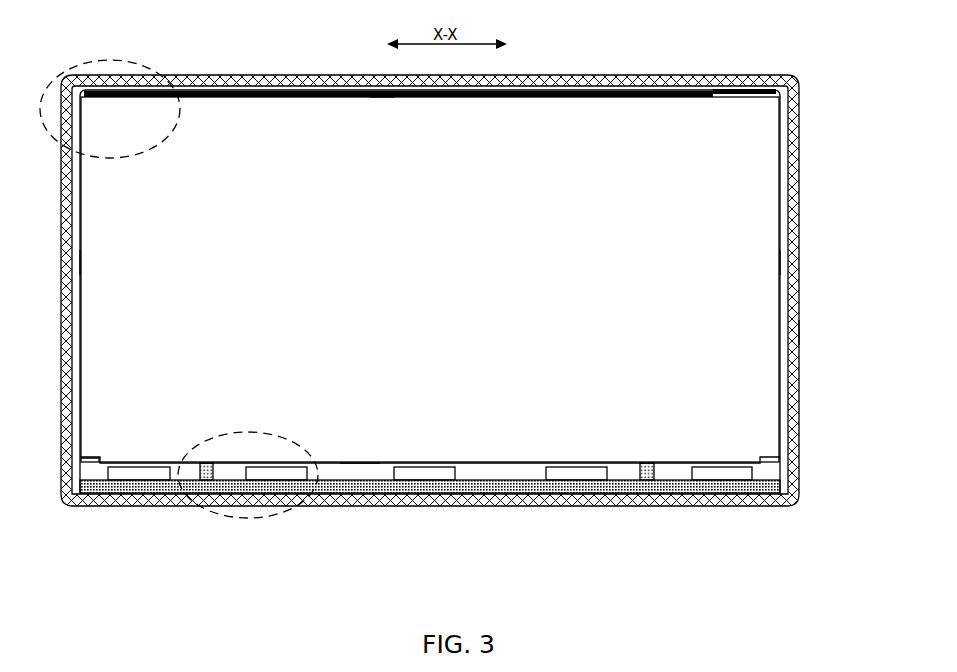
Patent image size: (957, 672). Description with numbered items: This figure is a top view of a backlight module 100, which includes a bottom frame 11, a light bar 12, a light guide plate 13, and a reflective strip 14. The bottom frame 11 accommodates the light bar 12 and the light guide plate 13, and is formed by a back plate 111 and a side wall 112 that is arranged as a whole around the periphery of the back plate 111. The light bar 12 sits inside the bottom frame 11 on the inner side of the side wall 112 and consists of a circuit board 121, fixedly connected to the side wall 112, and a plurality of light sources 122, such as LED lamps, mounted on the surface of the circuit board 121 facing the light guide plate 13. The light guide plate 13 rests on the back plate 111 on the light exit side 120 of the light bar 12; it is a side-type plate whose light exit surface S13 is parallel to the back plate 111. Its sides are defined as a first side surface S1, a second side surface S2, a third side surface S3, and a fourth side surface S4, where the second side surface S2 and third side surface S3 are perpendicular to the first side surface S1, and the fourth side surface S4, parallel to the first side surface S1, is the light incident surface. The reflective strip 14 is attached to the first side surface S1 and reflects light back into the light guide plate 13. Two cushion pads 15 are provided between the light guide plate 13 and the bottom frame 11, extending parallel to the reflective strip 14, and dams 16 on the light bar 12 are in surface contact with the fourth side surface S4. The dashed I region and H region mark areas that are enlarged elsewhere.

The backlight module 100 is at (48, 36).
The bottom frame 11 is at (870, 446).
The back plate 111 is at (781, 470).
The side wall 112 is at (797, 443).
The light bar 12 is at (325, 546).
The circuit board 121 is at (245, 487).
The light source 122 is at (270, 473).
The light guide plate 13 is at (487, 438).
The reflective strip 14 is at (215, 93).
The cushion pad 15 is at (103, 91).
The dam 16 is at (201, 480).
The light exit side 120 is at (89, 472).
The I region I is at (67, 69).
The H region H is at (227, 432).
The first side surface S1 is at (382, 97).
The second side surface S2 is at (82, 262).
The third side surface S3 is at (780, 262).
The fourth side surface S4 is at (358, 463).
The light exit surface S13 is at (732, 335).